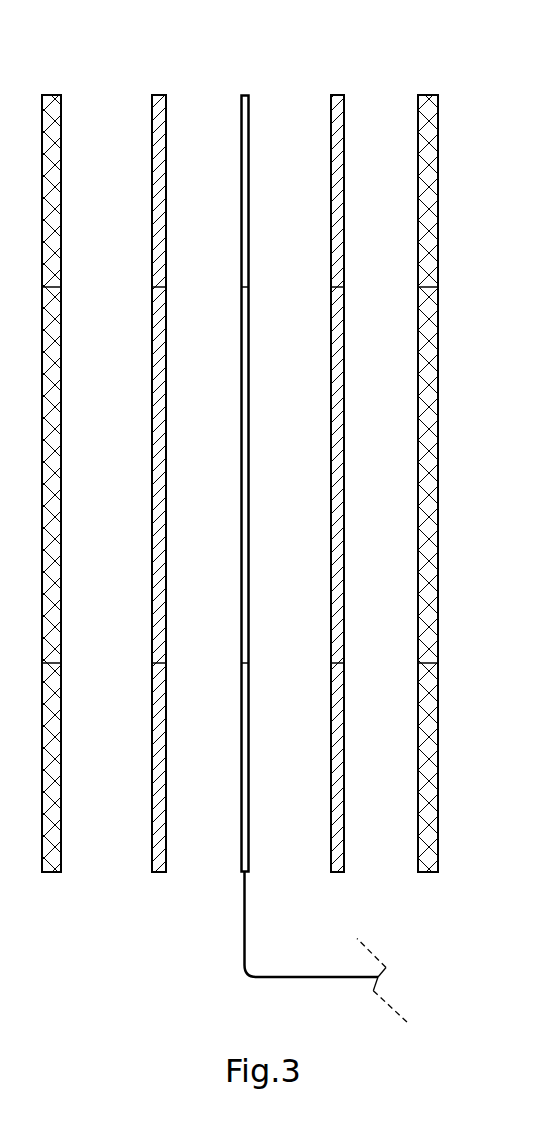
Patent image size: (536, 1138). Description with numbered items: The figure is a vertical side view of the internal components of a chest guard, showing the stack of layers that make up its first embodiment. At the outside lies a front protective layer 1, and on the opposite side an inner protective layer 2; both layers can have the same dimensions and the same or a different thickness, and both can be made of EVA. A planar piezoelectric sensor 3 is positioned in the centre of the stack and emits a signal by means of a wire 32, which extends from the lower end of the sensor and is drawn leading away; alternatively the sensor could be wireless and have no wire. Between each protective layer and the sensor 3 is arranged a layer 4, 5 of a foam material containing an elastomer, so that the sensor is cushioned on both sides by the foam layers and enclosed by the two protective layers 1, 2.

The front protective layer 1 is at (428, 95).
The inner protective layer 2 is at (52, 95).
The planar piezoelectric sensor 3 is at (244, 95).
The foam material layer 4 is at (337, 95).
The foam material layer 5 is at (159, 95).
The wire 32 is at (244, 920).